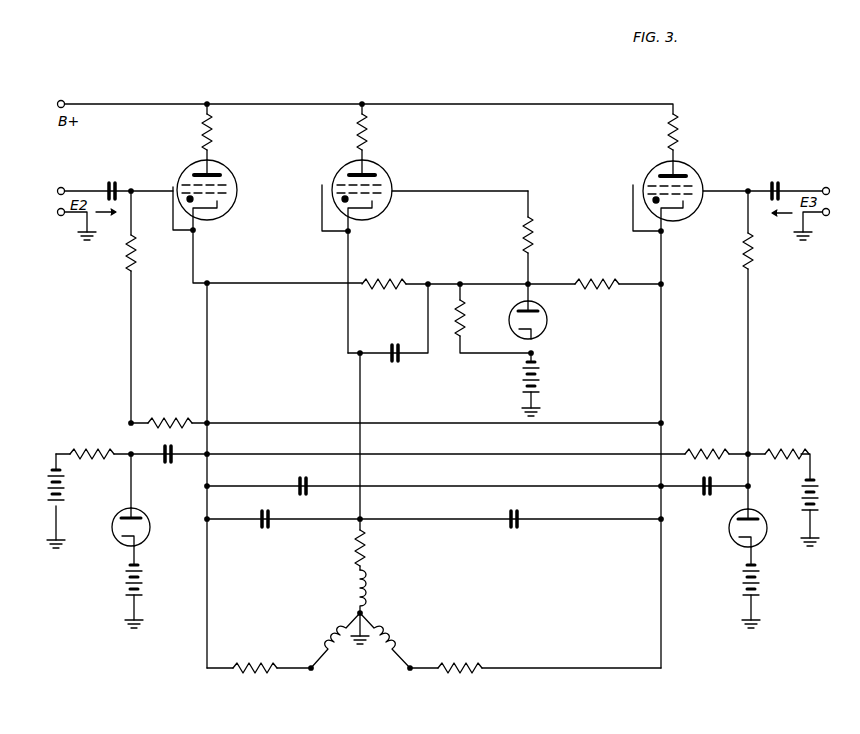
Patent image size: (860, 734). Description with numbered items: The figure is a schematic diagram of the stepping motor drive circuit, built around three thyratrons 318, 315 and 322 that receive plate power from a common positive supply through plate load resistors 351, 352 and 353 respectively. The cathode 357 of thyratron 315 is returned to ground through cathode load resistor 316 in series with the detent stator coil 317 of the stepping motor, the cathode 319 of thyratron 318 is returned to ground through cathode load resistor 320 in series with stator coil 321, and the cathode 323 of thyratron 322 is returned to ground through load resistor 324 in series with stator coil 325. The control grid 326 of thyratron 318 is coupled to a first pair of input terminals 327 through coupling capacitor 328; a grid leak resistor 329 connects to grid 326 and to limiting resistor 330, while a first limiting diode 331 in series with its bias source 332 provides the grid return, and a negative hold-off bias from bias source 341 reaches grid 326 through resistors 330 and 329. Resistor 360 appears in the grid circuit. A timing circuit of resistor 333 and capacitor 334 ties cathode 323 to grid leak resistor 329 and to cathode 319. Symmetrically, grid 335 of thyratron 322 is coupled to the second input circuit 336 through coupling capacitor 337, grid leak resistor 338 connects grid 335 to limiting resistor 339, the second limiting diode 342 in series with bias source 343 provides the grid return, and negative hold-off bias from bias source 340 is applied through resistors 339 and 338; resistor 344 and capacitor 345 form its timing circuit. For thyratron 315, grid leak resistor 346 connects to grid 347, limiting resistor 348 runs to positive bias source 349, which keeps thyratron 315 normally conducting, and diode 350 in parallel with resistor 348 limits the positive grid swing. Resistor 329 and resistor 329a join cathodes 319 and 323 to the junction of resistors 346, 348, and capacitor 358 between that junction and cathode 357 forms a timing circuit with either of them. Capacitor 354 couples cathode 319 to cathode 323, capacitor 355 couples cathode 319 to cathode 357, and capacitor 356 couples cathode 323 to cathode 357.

The thyratron 315 is at (388, 172).
The cathode load resistor 316 is at (370, 548).
The detent stator coil 317 is at (356, 594).
The thyratron 318 is at (236, 180).
The cathode 319 is at (196, 232).
The cathode load resistor 320 is at (266, 645).
The stator coil 321 is at (334, 638).
The thyratron 322 is at (700, 172).
The cathode 323 is at (665, 234).
The load resistor 324 is at (442, 665).
The stator coil 325 is at (381, 641).
The control grid 326 is at (222, 198).
The first pair of input terminals 327 is at (57, 190).
The coupling capacitor 328 is at (115, 182).
The grid leak resistor 329 is at (410, 268).
The resistor 329a is at (614, 268).
The limiting resistor 330 is at (92, 448).
The first limiting diode 331 is at (151, 527).
The first limiting diode bias source 332 is at (145, 586).
The resistor 333 is at (182, 406).
The capacitor 334 is at (168, 466).
The grid 335 is at (702, 191).
The second input circuit 336 is at (830, 188).
The coupling capacitor 337 is at (777, 182).
The grid leak resistor 338 is at (754, 256).
The limiting resistor 339 is at (789, 452).
The bias source 340 is at (805, 498).
The bias source 341 is at (66, 498).
The second limiting diode 342 is at (731, 540).
The second limiting diode bias source 343 is at (762, 590).
The resistor 344 is at (722, 436).
The capacitor 345 is at (704, 492).
The grid leak resistor 346 is at (534, 244).
The grid 347 is at (380, 191).
The limiting resistor 348 is at (463, 318).
The bias source 349 is at (540, 384).
The diode 350 is at (548, 318).
The plate load resistor 351 is at (214, 138).
The plate load resistor 352 is at (368, 138).
The plate load resistor 353 is at (679, 136).
The capacitor 354 is at (308, 484).
The capacitor 355 is at (272, 518).
The capacitor 356 is at (520, 513).
The cathode 357 is at (356, 222).
The capacitor 358 is at (408, 330).
The resistor 360 is at (126, 262).